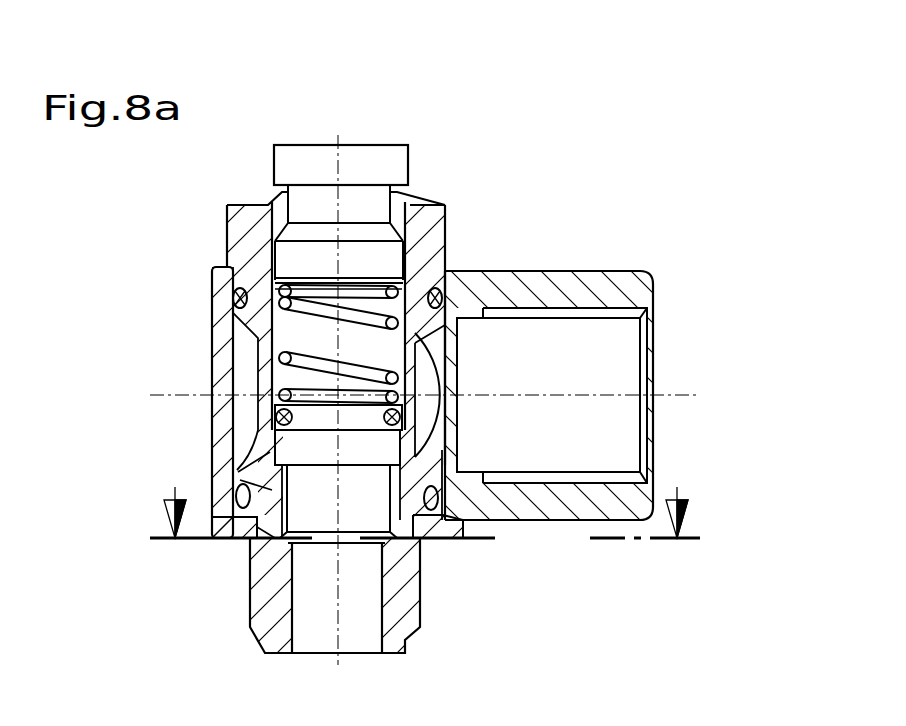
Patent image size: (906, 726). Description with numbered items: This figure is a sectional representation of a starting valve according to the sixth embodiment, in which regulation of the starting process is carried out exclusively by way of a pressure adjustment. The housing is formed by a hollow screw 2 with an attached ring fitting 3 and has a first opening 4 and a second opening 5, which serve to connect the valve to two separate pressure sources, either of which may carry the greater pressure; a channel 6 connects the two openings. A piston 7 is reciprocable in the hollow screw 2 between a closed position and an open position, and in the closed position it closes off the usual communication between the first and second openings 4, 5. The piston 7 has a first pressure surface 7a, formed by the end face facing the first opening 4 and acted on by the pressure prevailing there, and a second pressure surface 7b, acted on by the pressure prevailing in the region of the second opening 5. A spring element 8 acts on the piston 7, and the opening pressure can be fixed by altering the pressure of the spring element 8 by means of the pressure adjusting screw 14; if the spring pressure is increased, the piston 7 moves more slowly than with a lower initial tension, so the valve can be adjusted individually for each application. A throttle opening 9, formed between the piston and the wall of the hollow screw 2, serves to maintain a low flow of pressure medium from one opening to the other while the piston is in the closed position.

The hollow screw 2 is at (252, 255).
The ring fitting 3 is at (222, 373).
The first opening 4 is at (330, 650).
The second opening 5 is at (655, 395).
The channel 6 is at (355, 558).
The piston 7 is at (368, 480).
The first pressure surface 7a is at (262, 522).
The second pressure surface 7b is at (395, 464).
The spring element 8 is at (290, 303).
The throttle opening 9 is at (240, 507).
The pressure adjusting screw 14 is at (385, 163).